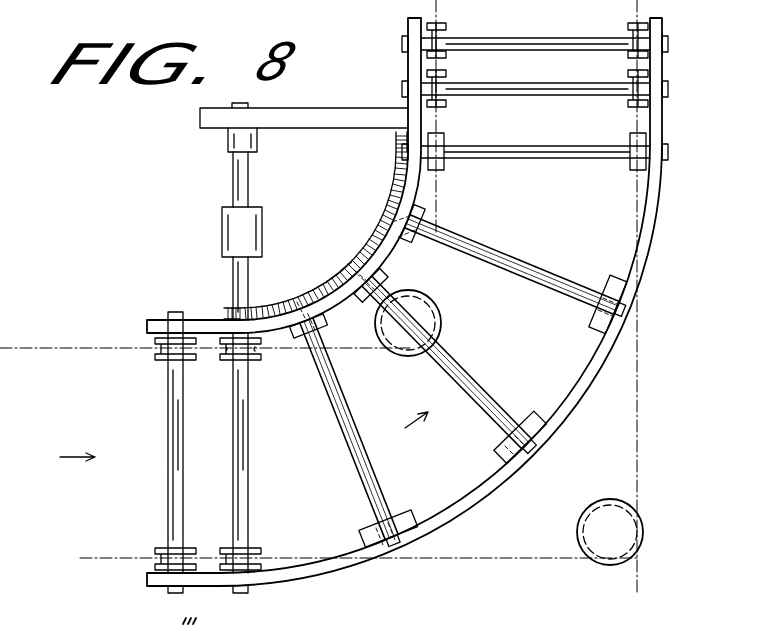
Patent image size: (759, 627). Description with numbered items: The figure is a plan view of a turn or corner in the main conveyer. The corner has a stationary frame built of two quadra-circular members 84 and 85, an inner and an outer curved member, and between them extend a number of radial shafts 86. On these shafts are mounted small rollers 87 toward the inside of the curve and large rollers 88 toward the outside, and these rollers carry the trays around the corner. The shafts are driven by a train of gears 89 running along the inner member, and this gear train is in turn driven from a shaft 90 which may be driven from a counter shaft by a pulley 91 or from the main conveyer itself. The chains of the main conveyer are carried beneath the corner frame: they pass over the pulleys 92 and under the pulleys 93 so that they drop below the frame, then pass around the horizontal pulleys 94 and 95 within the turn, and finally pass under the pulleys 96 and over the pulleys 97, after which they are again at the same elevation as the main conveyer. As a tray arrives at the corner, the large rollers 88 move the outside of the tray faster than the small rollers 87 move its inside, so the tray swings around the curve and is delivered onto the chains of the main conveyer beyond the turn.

The quadra-circular member 84 is at (413, 168).
The quadra-circular member 85 is at (656, 206).
The shaft 86 is at (528, 265).
The small roller 87 is at (428, 217).
The large roller 88 is at (628, 292).
The train of gears 89 is at (368, 236).
The shaft 90 is at (233, 278).
The pulley 91 is at (222, 228).
The pulley 92 is at (154, 565).
The pulley 93 is at (256, 568).
The horizontal pulley 94 is at (438, 322).
The horizontal pulley 95 is at (642, 520).
The pulley 96 is at (408, 74).
The pulley 97 is at (408, 33).